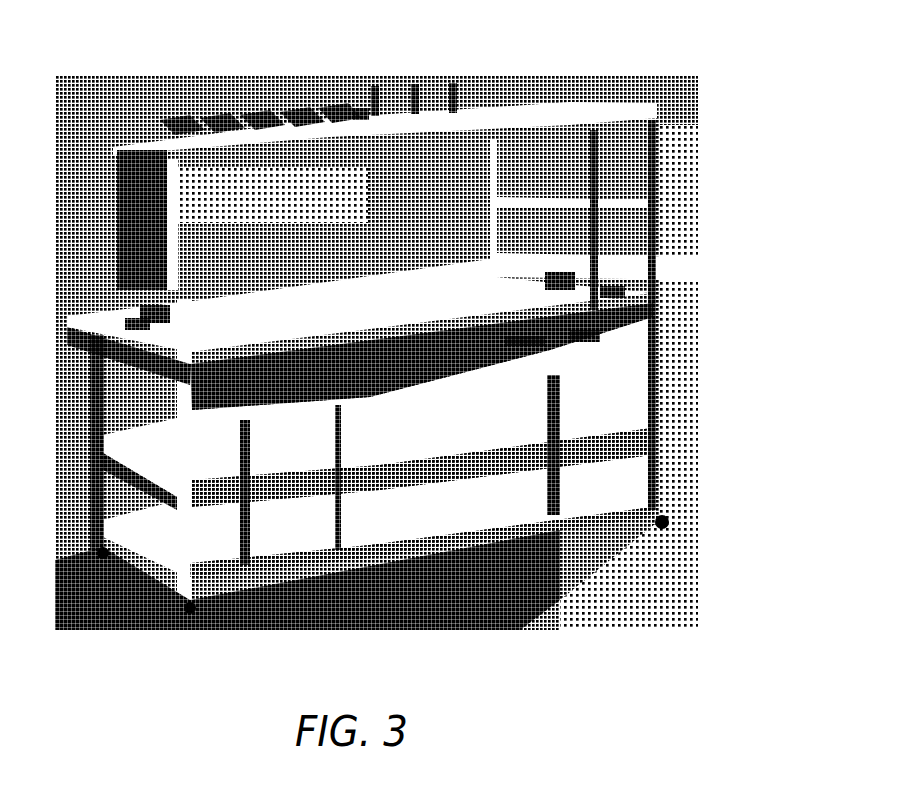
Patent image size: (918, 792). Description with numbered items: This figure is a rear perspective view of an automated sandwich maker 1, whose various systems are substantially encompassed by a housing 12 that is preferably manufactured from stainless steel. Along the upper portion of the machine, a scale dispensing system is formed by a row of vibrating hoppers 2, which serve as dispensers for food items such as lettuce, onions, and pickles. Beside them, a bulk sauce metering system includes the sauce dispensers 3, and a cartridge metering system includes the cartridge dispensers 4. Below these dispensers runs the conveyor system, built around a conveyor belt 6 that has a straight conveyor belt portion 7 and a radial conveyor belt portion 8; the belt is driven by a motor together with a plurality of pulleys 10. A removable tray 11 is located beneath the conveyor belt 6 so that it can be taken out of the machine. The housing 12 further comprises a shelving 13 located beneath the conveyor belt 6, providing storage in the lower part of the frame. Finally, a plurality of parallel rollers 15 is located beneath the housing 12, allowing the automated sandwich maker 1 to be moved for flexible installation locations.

The automated sandwich maker 1 is at (714, 66).
The vibrating hoppers 2 is at (325, 117).
The sauce dispensers 3 is at (362, 115).
The cartridge dispensers 4 is at (453, 87).
The conveyor belt 6 is at (563, 287).
The straight conveyor belt portion 7 is at (140, 322).
The radial conveyor belt portion 8 is at (610, 295).
The pulleys 10 is at (585, 340).
The removable tray 11 is at (525, 345).
The housing 12 is at (547, 110).
The shelving 13 is at (470, 455).
The parallel rollers 15 is at (190, 620).